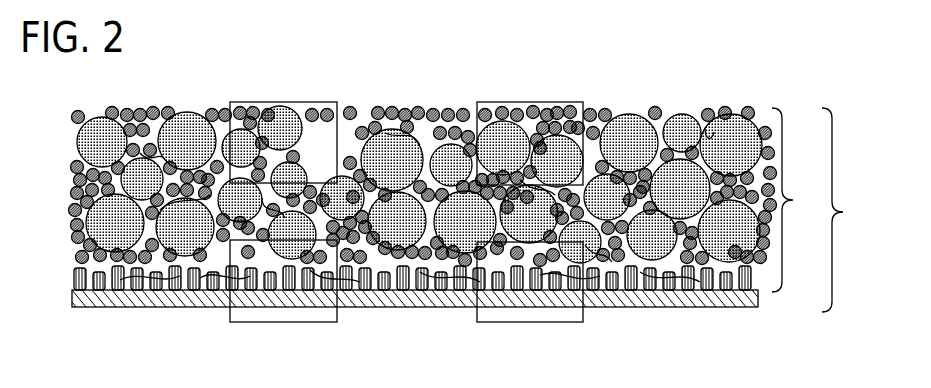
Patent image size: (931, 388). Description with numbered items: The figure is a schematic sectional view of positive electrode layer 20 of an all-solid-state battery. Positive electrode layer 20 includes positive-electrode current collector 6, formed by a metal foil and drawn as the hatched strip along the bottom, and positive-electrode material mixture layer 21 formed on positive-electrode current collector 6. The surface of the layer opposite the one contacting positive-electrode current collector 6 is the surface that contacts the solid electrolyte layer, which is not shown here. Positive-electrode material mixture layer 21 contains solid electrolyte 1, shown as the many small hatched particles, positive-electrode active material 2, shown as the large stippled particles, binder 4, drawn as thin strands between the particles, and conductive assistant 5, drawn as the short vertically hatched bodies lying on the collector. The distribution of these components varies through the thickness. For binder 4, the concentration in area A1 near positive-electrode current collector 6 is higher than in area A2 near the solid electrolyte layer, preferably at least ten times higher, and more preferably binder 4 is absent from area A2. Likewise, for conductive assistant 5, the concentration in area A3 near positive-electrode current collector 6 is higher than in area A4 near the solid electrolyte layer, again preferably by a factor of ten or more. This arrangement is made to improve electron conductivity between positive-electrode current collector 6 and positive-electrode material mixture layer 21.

The solid electrolyte 1 is at (80, 195).
The positive-electrode active material 2 is at (88, 143).
The binder 4 is at (702, 143).
The conductive assistant 5 is at (78, 282).
The positive-electrode current collector 6 is at (738, 300).
The positive electrode layer 20 is at (854, 210).
The positive-electrode material mixture layer 21 is at (803, 200).
The area A1 is at (290, 322).
The area A2 is at (275, 102).
The area A3 is at (540, 322).
The area A4 is at (530, 102).